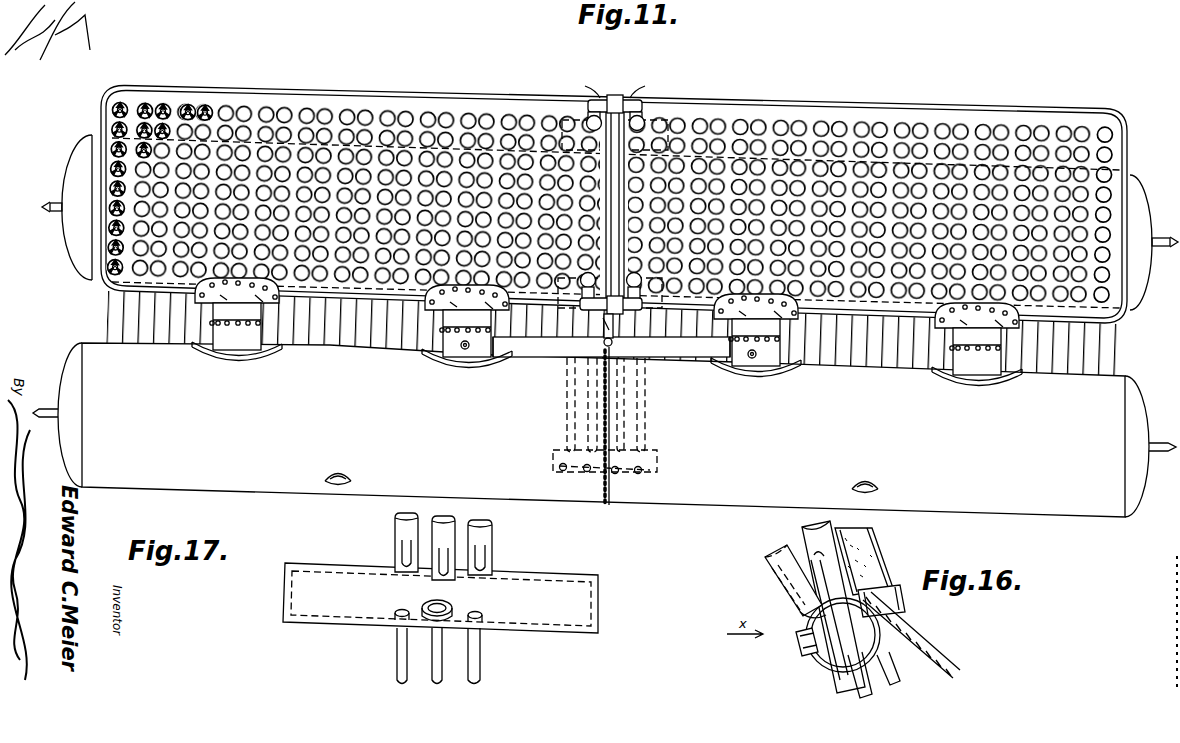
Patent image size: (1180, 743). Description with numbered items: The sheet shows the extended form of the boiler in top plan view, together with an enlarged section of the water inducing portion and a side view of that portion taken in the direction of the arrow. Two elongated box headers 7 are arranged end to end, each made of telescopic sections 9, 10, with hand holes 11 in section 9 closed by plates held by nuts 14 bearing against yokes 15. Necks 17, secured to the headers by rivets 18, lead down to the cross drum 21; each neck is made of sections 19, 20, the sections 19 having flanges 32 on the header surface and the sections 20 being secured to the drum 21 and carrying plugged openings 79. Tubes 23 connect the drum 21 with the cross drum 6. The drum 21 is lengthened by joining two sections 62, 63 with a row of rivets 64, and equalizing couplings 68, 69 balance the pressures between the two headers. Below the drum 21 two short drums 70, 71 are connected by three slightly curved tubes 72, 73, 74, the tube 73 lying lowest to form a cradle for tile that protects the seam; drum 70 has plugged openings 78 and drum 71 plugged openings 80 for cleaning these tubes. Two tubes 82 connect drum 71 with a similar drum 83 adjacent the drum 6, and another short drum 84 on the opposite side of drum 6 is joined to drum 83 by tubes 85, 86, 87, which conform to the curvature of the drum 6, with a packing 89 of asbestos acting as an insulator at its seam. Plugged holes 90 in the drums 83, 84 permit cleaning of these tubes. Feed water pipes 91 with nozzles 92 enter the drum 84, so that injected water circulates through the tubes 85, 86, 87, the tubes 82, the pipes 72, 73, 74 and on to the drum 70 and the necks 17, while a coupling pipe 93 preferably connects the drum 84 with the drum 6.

In FIG. 11, the cross drum 6 is at (607, 222).
In FIG. 16, the cross drum 6 is at (878, 558).
In FIG. 11, the box header 7 is at (610, 197).
In FIG. 11, the outer section 9 is at (614, 204).
In FIG. 11, the inner section 10 is at (614, 204).
In FIG. 11, the hand holes 11 is at (1103, 214).
In FIG. 11, the nuts 14 is at (183, 122).
In FIG. 11, the yokes 15 is at (130, 189).
In FIG. 11, the necks 17 is at (199, 353).
In FIG. 11, the rivets 18 is at (285, 299).
In FIG. 11, the neck section 19 is at (608, 326).
In FIG. 11, the neck section 20 is at (754, 374).
In FIG. 11, the cross drum 21 is at (306, 492).
In FIG. 11, the tubes 23 is at (136, 317).
In FIG. 11, the flanges 32 is at (616, 295).
In FIG. 11, the drum section 62 is at (603, 430).
In FIG. 11, the drum section 63 is at (860, 434).
In FIG. 11, the row of rivets 64 is at (603, 482).
In FIG. 11, the equalizing coupling 68 is at (615, 96).
In FIG. 11, the equalizing coupling 69 is at (611, 359).
In FIG. 11, the short drum 70 is at (692, 360).
In FIG. 11, the short drum 71 is at (553, 452).
In FIG. 11, the tube 72 is at (588, 426).
In FIG. 11, the tube 73 is at (560, 466).
In FIG. 11, the tube 74 is at (647, 436).
In FIG. 11, the plugged openings 78 is at (606, 352).
In FIG. 11, the plugged openings 79 is at (465, 349).
In FIG. 11, the plugged openings 80 is at (565, 472).
In FIG. 11, the tubes 82 is at (568, 416).
In FIG. 11, the drum 83 is at (557, 292).
In FIG. 11, the short drum 84 is at (650, 122).
In FIG. 17, the short drum 84 is at (440, 598).
In FIG. 16, the short drum 84 is at (825, 660).
In FIG. 11, the tube 85 is at (600, 314).
In FIG. 17, the tube 85 is at (482, 541).
In FIG. 16, the tube 85 is at (803, 530).
In FIG. 17, the tube 86 is at (443, 538).
In FIG. 16, the tube 86 is at (777, 550).
In FIG. 11, the tube 87 is at (610, 318).
In FIG. 17, the tube 87 is at (398, 534).
In FIG. 11, the packing 89 is at (604, 344).
In FIG. 16, the packing 89 is at (848, 528).
In FIG. 17, the plugged holes 90 is at (452, 608).
In FIG. 16, the plugged holes 90 is at (800, 650).
In FIG. 17, the feed water pipes 91 is at (472, 661).
In FIG. 16, the feed water pipes 91 is at (894, 685).
In FIG. 17, the nozzles 92 is at (400, 608).
In FIG. 16, the nozzles 92 is at (804, 614).
In FIG. 16, the coupling pipe 93 is at (890, 590).